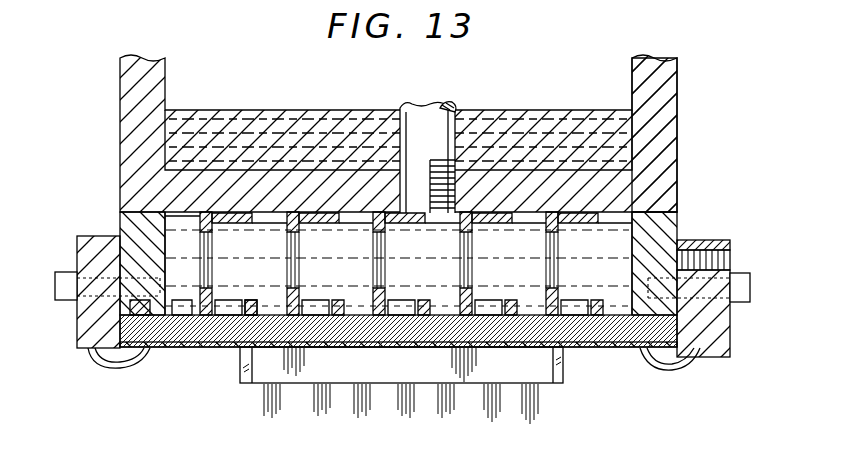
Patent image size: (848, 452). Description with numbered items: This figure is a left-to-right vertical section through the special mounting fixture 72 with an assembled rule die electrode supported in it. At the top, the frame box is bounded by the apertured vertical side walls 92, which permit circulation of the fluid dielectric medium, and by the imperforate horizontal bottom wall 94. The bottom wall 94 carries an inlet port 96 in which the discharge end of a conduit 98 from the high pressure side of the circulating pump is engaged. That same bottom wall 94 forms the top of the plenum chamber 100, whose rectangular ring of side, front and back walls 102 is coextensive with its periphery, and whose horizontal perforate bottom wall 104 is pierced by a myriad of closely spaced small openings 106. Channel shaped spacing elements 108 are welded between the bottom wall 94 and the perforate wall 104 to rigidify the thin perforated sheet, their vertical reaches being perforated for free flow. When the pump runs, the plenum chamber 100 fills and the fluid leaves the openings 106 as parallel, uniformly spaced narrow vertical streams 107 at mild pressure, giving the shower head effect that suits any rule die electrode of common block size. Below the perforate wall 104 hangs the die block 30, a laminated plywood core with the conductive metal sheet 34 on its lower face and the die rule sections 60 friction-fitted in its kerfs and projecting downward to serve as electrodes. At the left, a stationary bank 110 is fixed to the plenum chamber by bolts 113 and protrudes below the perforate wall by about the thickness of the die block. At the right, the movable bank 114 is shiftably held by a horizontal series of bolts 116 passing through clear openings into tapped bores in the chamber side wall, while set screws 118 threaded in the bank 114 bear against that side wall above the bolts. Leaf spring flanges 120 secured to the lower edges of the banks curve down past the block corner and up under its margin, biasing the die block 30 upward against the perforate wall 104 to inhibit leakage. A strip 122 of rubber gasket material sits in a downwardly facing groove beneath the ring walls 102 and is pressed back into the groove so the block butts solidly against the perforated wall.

The special mounting fixture 72 is at (112, 112).
The side wall 92 is at (662, 116).
The bottom wall 94 is at (540, 168).
The inlet port 96 is at (408, 172).
The conduit 98 is at (452, 104).
The plenum chamber 100 is at (673, 218).
The side, front and back walls 102 is at (128, 226).
The bottom wall 104 is at (350, 278).
The openings 106 is at (432, 306).
The spacing elements 108 is at (520, 306).
The strip of gasket material 122 is at (644, 308).
The stationary bank 110 is at (78, 320).
The bolts 113 is at (58, 290).
The movable bank 114 is at (720, 324).
The bolts 116 is at (752, 288).
The set screws 118 is at (733, 262).
The leaf spring flanges 120 is at (126, 360).
The metal sheet 34 is at (194, 348).
The die block 30 is at (600, 348).
The die rule sections 60 is at (242, 372).
The streams 107 is at (426, 386).